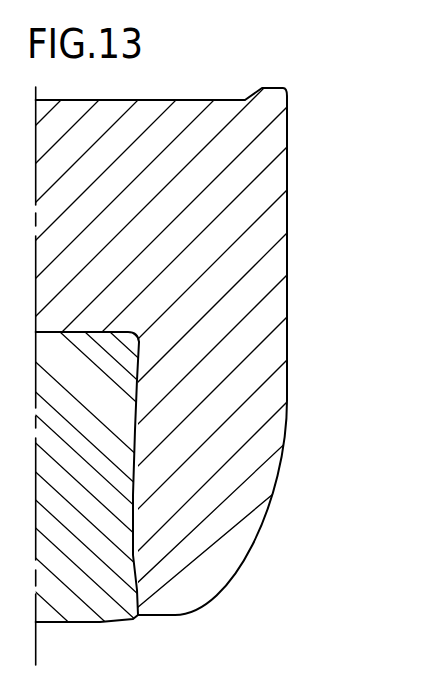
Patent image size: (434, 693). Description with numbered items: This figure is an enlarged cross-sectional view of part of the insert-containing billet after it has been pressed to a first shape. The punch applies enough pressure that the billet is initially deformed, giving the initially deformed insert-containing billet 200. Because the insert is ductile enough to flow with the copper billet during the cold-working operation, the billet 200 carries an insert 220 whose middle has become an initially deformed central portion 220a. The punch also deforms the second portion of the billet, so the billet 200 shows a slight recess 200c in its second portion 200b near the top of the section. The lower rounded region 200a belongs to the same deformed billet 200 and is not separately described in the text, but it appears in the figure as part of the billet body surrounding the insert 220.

The initially deformed insert-containing billet 200 is at (217, 346).
The rounded bottom portion of body 200a is at (235, 542).
The second portion 200b is at (236, 100).
The slight recess 200c is at (180, 100).
The insert 220 is at (216, 374).
The initially deformed central portion 220a is at (133, 494).